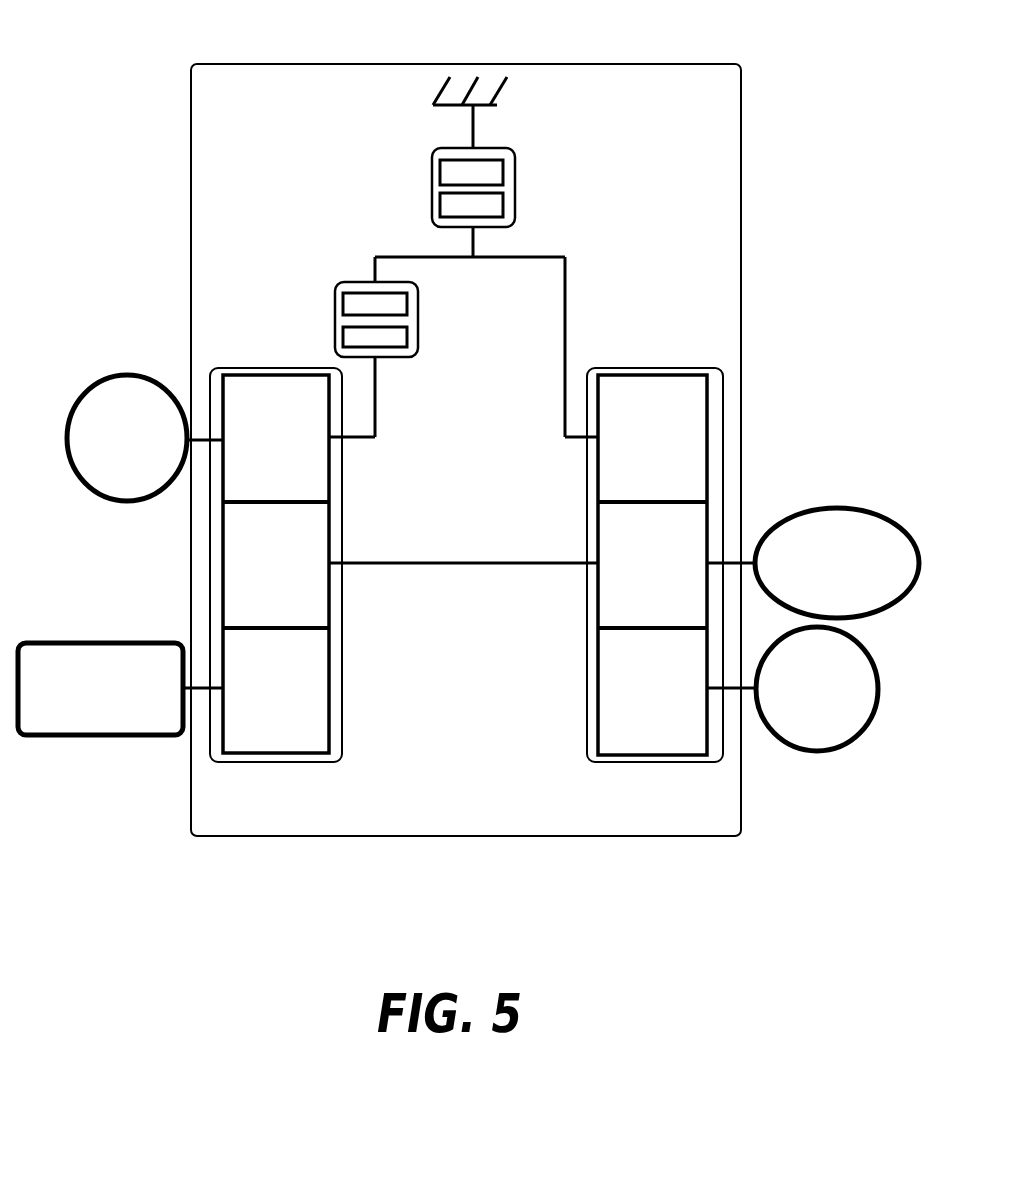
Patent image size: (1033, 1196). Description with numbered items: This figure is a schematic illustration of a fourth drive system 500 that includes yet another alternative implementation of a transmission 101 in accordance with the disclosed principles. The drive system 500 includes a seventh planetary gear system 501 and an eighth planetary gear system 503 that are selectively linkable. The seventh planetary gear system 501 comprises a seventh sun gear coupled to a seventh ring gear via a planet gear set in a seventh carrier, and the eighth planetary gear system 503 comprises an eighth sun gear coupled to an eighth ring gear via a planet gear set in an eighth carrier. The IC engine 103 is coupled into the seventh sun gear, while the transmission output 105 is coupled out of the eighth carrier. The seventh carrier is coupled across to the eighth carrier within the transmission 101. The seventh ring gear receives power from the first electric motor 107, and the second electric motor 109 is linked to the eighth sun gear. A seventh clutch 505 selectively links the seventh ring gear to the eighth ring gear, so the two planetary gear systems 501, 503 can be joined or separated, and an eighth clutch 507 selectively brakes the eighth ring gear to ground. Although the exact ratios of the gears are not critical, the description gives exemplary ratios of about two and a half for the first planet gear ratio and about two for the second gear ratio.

The fourth drive system 500 is at (175, 66).
The transmission 101 is at (497, 819).
The IC engine 103 is at (125, 719).
The transmission output 105 is at (837, 563).
The first electric motor 107 is at (154, 471).
The second electric motor 109 is at (843, 721).
The seventh planetary gear system 501 is at (342, 690).
The eighth planetary gear system 503 is at (590, 650).
The seventh clutch 505 is at (352, 283).
The eighth clutch 507 is at (432, 170).